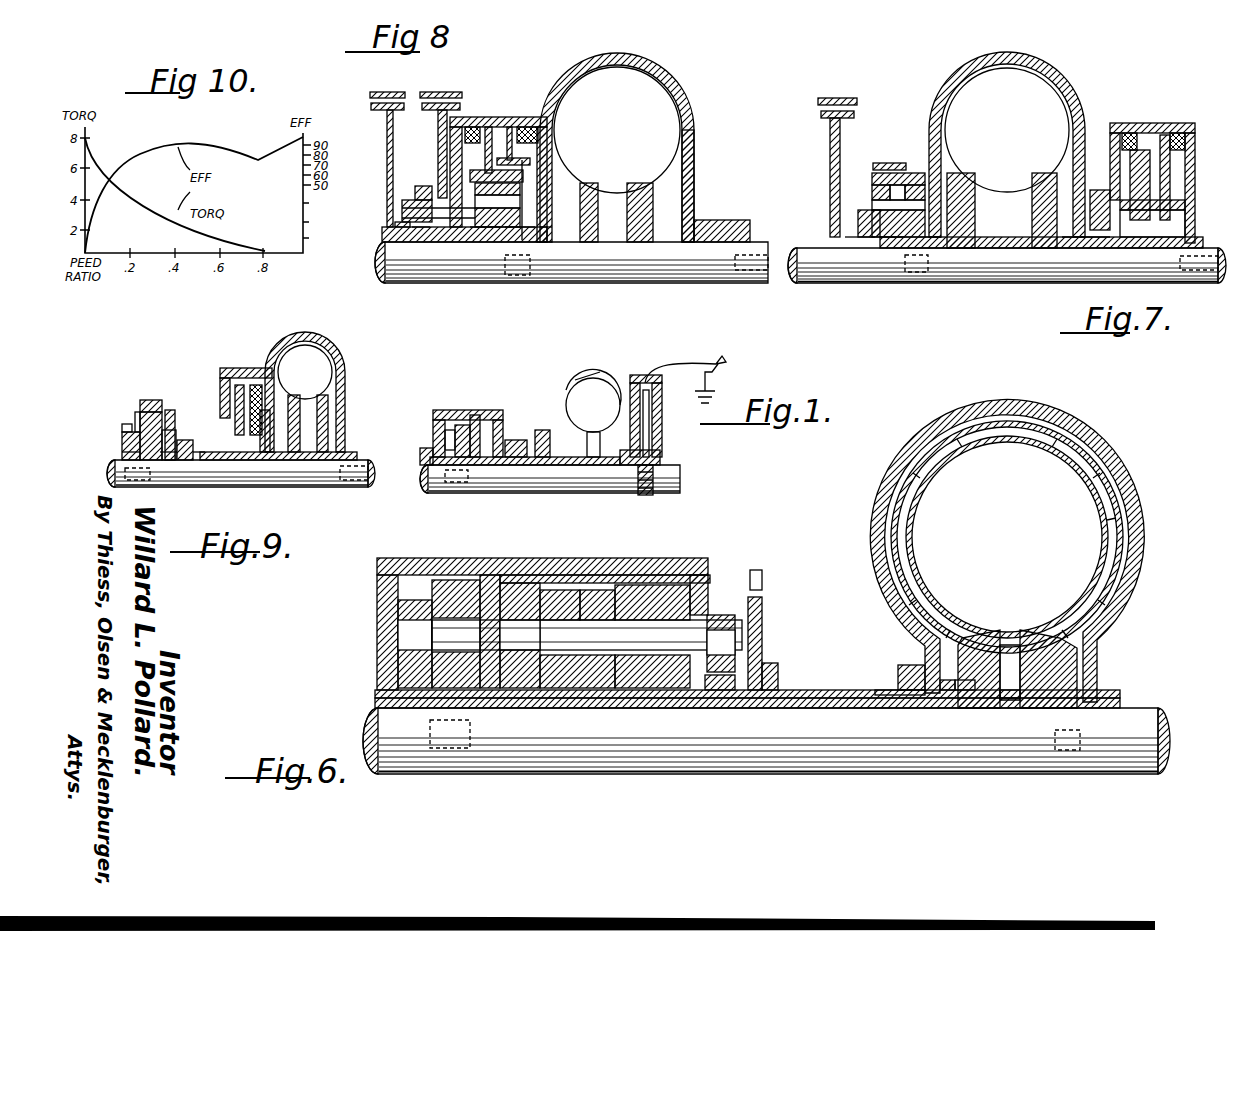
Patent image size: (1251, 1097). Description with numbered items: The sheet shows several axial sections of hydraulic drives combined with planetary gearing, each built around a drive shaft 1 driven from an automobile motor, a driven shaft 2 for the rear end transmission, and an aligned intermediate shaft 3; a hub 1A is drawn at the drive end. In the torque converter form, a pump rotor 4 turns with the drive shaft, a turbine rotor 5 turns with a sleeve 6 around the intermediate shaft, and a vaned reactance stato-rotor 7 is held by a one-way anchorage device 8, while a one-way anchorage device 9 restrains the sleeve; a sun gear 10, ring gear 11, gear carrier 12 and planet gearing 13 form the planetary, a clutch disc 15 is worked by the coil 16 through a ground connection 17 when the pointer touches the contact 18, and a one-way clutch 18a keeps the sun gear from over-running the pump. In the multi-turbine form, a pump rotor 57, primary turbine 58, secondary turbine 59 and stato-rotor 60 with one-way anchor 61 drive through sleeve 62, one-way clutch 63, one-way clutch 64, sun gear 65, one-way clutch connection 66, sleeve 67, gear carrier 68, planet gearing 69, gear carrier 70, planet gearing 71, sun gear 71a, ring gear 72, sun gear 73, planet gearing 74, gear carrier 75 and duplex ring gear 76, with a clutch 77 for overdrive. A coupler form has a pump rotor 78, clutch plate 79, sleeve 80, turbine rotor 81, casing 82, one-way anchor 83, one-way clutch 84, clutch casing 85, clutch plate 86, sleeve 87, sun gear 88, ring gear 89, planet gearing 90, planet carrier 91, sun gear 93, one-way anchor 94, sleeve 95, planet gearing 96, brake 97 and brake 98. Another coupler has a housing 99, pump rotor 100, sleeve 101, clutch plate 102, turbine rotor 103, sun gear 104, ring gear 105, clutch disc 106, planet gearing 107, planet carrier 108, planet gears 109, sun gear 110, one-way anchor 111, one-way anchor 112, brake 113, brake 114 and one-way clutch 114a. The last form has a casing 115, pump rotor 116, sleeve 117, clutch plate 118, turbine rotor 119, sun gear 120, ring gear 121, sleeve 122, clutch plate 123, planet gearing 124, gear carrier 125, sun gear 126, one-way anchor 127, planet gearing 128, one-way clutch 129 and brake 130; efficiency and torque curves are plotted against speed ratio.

In FIG. 8, the drive shaft 1 is at (760, 276).
In FIG. 7, the drive shaft 1 is at (1208, 245).
In FIG. 9, the drive shaft 1 is at (358, 487).
In FIG. 1, the drive shaft 1 is at (660, 490).
In FIG. 6, the drive shaft 1 is at (1125, 775).
In FIG. 1, the worm gear hub 1A is at (425, 448).
In FIG. 8, the driven shaft 2 is at (462, 283).
In FIG. 7, the driven shaft 2 is at (880, 283).
In FIG. 9, the driven shaft 2 is at (140, 487).
In FIG. 1, the driven shaft 2 is at (445, 493).
In FIG. 6, the driven shaft 2 is at (405, 775).
In FIG. 8, the intermediate shaft 3 is at (618, 278).
In FIG. 7, the intermediate shaft 3 is at (1040, 280).
In FIG. 9, the intermediate shaft 3 is at (315, 485).
In FIG. 1, the intermediate shaft 3 is at (568, 493).
In FIG. 6, the intermediate shaft 3 is at (706, 775).
In FIG. 1, the pump rotor 4 is at (572, 390).
In FIG. 1, the turbine rotor 5 is at (603, 374).
In FIG. 1, the sleeve 6 is at (594, 466).
In FIG. 1, the vaned reactance stato-rotor 7 is at (580, 430).
In FIG. 1, the one-way anchorage device 8 is at (540, 430).
In FIG. 1, the one-way anchorage device 9 is at (515, 440).
In FIG. 1, the sun gear 10 is at (470, 465).
In FIG. 1, the ring gear 11 is at (468, 420).
In FIG. 1, the gear carrier 12 is at (455, 410).
In FIG. 1, the planet gearing 13 is at (478, 420).
In FIG. 1, the clutch disc 15 is at (662, 412).
In FIG. 1, the coil 16 is at (660, 398).
In FIG. 1, the ground connection 17 is at (735, 378).
In FIG. 1, the contact 18 is at (728, 360).
In FIG. 8, the one-way clutch 18a is at (708, 222).
In FIG. 1, the one-way clutch 18a is at (662, 456).
In FIG. 6, the pump rotor 57 is at (1146, 538).
In FIG. 6, the primary turbine 58 is at (1100, 525).
In FIG. 6, the secondary turbine 59 is at (975, 495).
In FIG. 6, the stato-rotor 60 is at (1012, 440).
In FIG. 6, the one-way anchor 61 is at (898, 678).
In FIG. 6, the sleeve 62 is at (915, 698).
In FIG. 6, the one-way clutch 63 is at (955, 698).
In FIG. 6, the one-way clutch 64 is at (1010, 708).
In FIG. 6, the sun gear 65 is at (720, 683).
In FIG. 6, the one-way clutch connection 66 is at (778, 683).
In FIG. 6, the sleeve 67 is at (848, 708).
In FIG. 6, the gear carrier 68 is at (615, 612).
In FIG. 6, the planet gearing 69 is at (756, 602).
In FIG. 6, the gear carrier 70 is at (513, 605).
In FIG. 6, the planet gearing 71 is at (590, 617).
In FIG. 6, the sun gear 71a is at (575, 690).
In FIG. 6, the ring gear 72 is at (640, 592).
In FIG. 6, the sun gear 73 is at (500, 690).
In FIG. 6, the planet gearing 74 is at (458, 592).
In FIG. 6, the gear carrier 75 is at (410, 650).
In FIG. 6, the duplex ring gear 76 is at (432, 560).
In FIG. 6, the clutch 77 is at (765, 578).
In FIG. 7, the pump rotor 78 is at (1062, 128).
In FIG. 7, the clutch plate 79 is at (1170, 170).
In FIG. 7, the sleeve 80 is at (1115, 240).
In FIG. 7, the turbine rotor 81 is at (950, 125).
In FIG. 7, the casing 82 is at (1068, 80).
In FIG. 7, the one-way anchor 83 is at (1098, 190).
In FIG. 7, the one-way clutch 84 is at (1090, 242).
In FIG. 7, the clutch casing 85 is at (1170, 125).
In FIG. 7, the clutch plate 86 is at (1150, 190).
In FIG. 7, the sleeve 87 is at (1160, 212).
In FIG. 7, the sun gear 88 is at (935, 248).
In FIG. 7, the ring gear 89 is at (922, 175).
In FIG. 7, the planet gearing 90 is at (925, 198).
In FIG. 7, the planet carrier 91 is at (880, 248).
In FIG. 7, the sun gear 93 is at (858, 232).
In FIG. 7, the one-way anchor 94 is at (860, 212).
In FIG. 7, the sleeve 95 is at (848, 248).
In FIG. 7, the planet gearing 96 is at (872, 190).
In FIG. 7, the brake 97 is at (887, 162).
In FIG. 7, the brake 98 is at (850, 102).
In FIG. 8, the housing 99 is at (690, 92).
In FIG. 8, the pump rotor 100 is at (574, 162).
In FIG. 8, the sleeve 101 is at (554, 246).
In FIG. 8, the clutch plate 102 is at (506, 125).
In FIG. 8, the turbine rotor 103 is at (680, 140).
In FIG. 8, the sun gear 104 is at (528, 250).
In FIG. 8, the ring gear 105 is at (470, 175).
In FIG. 8, the clutch disc 106 is at (488, 175).
In FIG. 8, the planet gearing 107 is at (548, 192).
In FIG. 8, the planet carrier 108 is at (500, 248).
In FIG. 8, the planet gears 109 is at (448, 196).
In FIG. 8, the sun gear 110 is at (440, 246).
In FIG. 8, the one-way anchor 111 is at (390, 234).
In FIG. 8, the one-way anchor 112 is at (390, 272).
In FIG. 8, the brake 113 is at (387, 92).
In FIG. 8, the brake 114 is at (442, 92).
In FIG. 8, the one-way clutch 114a is at (400, 214).
In FIG. 9, the casing 115 is at (340, 360).
In FIG. 9, the pump rotor 116 is at (276, 340).
In FIG. 9, the sleeve 117 is at (278, 462).
In FIG. 9, the clutch plate 118 is at (258, 462).
In FIG. 9, the turbine rotor 119 is at (345, 378).
In FIG. 9, the sun gear 120 is at (168, 462).
In FIG. 9, the ring gear 121 is at (170, 410).
In FIG. 9, the sleeve 122 is at (190, 445).
In FIG. 9, the clutch plate 123 is at (232, 368).
In FIG. 9, the planet gearing 124 is at (178, 430).
In FIG. 9, the gear carrier 125 is at (140, 412).
In FIG. 9, the sun gear 126 is at (125, 460).
In FIG. 9, the one-way anchor 127 is at (122, 440).
In FIG. 9, the planet gearing 128 is at (125, 430).
In FIG. 9, the one-way clutch 129 is at (200, 462).
In FIG. 9, the brake 130 is at (150, 400).